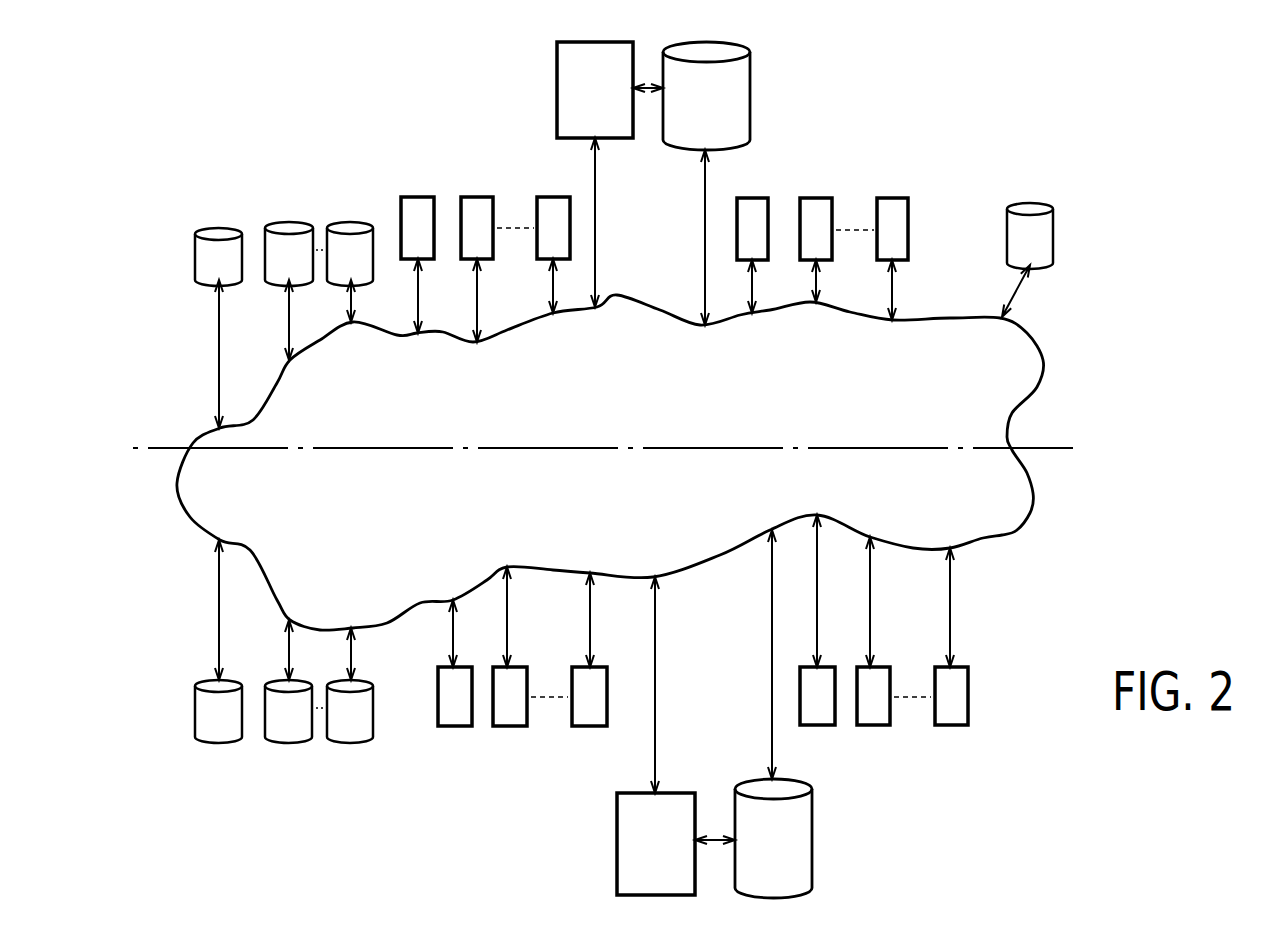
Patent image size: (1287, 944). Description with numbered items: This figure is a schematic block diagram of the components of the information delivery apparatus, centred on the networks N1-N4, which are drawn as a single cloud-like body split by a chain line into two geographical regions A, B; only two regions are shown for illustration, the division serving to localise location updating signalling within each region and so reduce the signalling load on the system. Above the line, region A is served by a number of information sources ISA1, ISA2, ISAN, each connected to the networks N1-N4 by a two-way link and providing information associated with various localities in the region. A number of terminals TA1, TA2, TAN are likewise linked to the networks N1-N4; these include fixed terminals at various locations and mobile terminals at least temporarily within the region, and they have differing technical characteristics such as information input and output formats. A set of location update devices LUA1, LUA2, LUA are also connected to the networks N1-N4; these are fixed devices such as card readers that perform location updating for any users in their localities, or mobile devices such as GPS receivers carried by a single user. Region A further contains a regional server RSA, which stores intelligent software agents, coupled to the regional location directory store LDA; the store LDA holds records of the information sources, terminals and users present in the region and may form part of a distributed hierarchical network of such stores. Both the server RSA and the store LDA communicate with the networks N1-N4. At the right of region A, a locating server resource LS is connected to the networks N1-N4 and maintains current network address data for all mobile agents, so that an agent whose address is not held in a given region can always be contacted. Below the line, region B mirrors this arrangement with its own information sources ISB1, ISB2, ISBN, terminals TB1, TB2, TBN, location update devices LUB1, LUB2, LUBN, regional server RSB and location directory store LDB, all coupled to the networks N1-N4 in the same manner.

The networks N1-N4 is at (980, 528).
The geographical region A is at (653, 425).
The geographical region B is at (653, 478).
The information source ISA1 is at (219, 228).
The information source ISA2 is at (289, 222).
The information source ISAN is at (348, 222).
The terminal TA1 is at (412, 197).
The terminal TA2 is at (478, 197).
The terminal TAN is at (553, 197).
The regional server RSA is at (557, 104).
The regional location directory store LDA is at (740, 102).
The location update device LUA1 is at (750, 205).
The location update device LUA2 is at (813, 205).
The location update device LUA is at (890, 215).
The locating server resource LS is at (1027, 207).
The information source ISB1 is at (221, 730).
The information source ISB2 is at (295, 730).
The information source ISBN is at (355, 730).
The terminal TB1 is at (470, 726).
The terminal TB2 is at (525, 726).
The terminal TBN is at (598, 726).
The regional server RSB is at (617, 850).
The regional location directory store LDB is at (812, 870).
The location update device LUB1 is at (835, 725).
The location update device LUB2 is at (890, 725).
The location update device LUBN is at (968, 725).